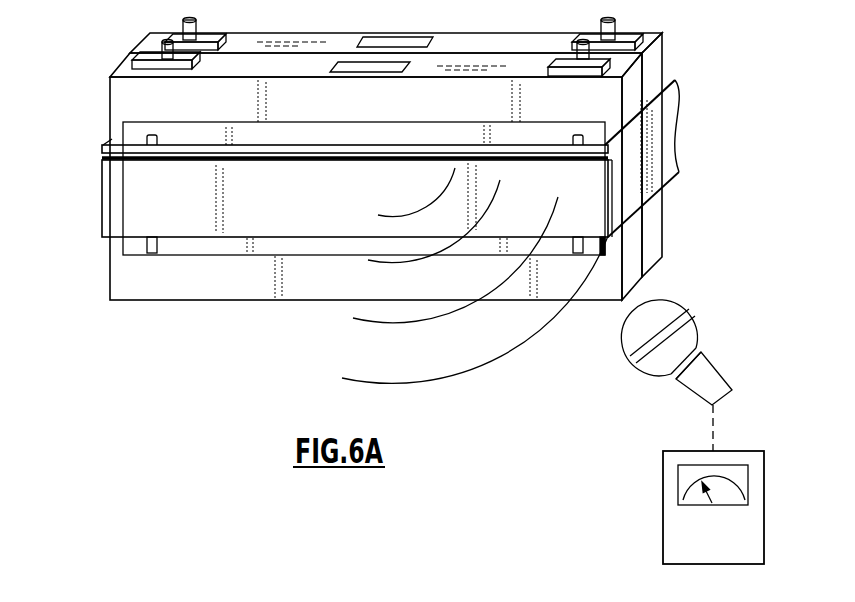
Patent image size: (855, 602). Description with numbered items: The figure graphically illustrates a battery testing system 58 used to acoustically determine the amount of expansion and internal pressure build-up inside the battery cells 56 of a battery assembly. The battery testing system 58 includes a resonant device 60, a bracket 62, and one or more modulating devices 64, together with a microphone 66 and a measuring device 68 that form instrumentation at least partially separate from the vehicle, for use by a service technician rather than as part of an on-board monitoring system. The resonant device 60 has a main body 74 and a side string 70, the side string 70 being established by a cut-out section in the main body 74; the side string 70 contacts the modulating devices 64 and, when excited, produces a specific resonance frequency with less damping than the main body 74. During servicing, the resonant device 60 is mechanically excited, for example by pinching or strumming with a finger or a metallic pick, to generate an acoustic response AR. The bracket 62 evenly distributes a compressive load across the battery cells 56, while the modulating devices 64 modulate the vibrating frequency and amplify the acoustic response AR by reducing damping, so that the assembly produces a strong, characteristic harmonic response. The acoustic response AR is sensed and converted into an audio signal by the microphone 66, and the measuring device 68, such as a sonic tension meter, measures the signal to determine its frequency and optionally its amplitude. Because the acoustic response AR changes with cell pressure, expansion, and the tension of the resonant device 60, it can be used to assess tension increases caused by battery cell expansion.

The battery cells 56 is at (537, 65).
The battery testing system 58 is at (350, 203).
The resonant device 60 is at (334, 227).
The bracket 62 is at (398, 250).
The modulating devices 64 is at (152, 264).
The microphone 66 is at (668, 306).
The measuring device 68 is at (764, 528).
The side string 70 is at (336, 157).
The main body 74 is at (372, 208).
The acoustic response AR is at (446, 403).